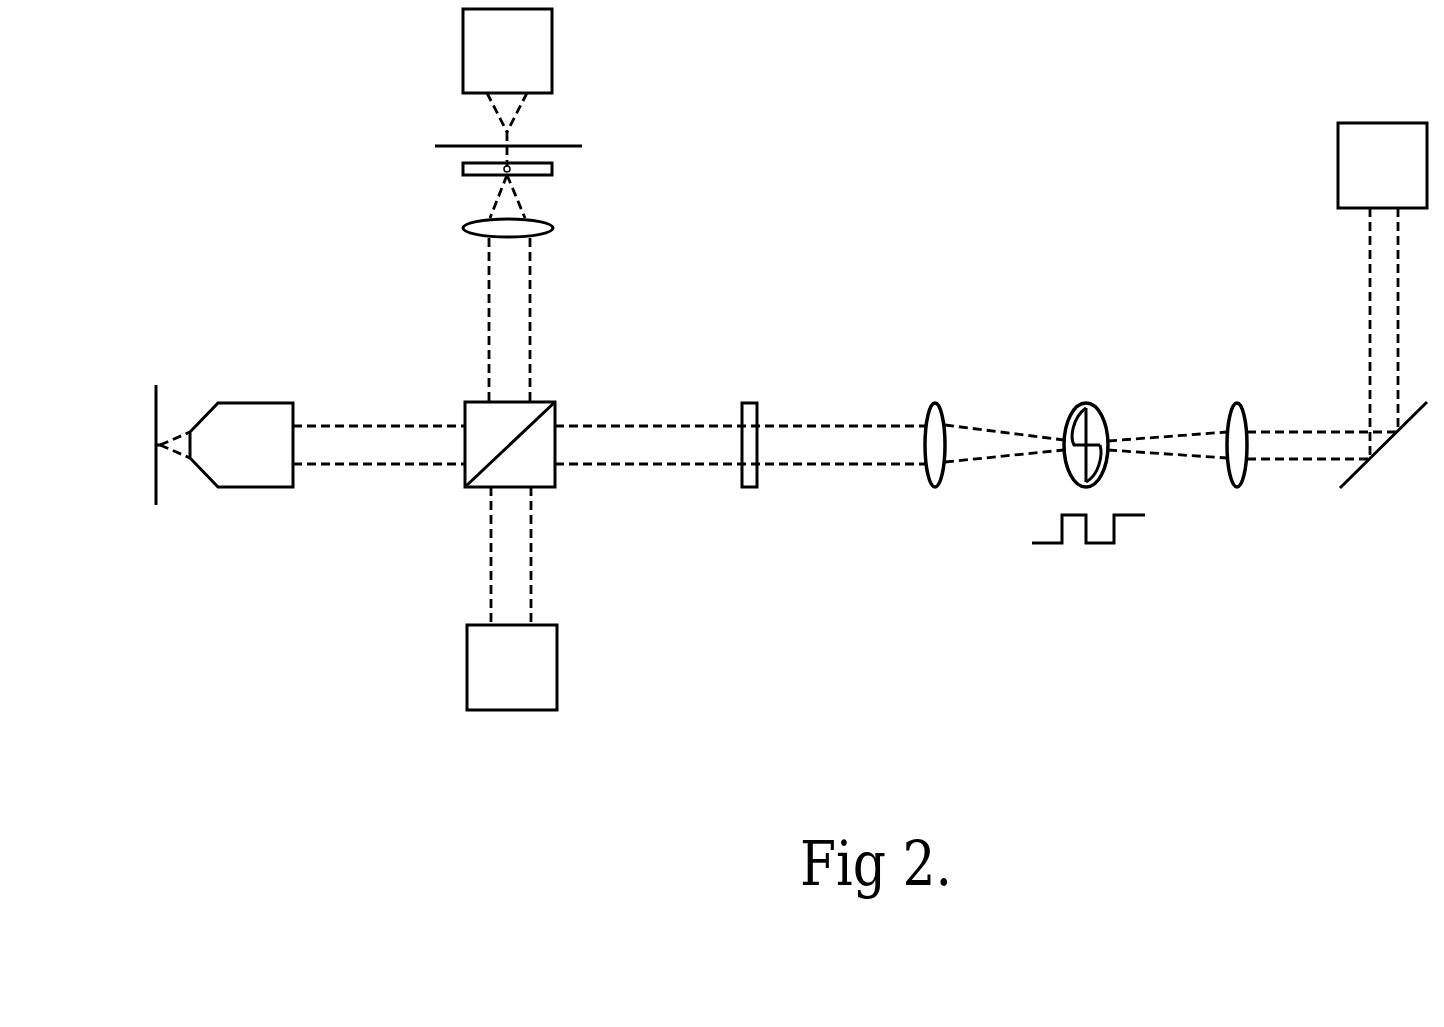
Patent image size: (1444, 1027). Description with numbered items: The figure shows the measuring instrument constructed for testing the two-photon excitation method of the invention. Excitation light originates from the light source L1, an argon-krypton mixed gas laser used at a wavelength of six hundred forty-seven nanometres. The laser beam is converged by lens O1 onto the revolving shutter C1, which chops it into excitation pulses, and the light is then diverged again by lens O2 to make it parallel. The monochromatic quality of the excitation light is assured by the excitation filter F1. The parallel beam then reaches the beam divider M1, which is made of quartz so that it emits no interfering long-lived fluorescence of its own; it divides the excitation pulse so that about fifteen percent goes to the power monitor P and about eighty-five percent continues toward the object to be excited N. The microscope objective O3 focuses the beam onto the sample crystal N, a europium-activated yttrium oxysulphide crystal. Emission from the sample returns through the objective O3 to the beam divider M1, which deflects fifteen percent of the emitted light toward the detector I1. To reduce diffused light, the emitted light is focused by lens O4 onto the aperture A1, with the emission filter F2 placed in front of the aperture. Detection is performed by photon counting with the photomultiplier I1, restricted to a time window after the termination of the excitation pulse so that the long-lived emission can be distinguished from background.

The detector I1 is at (507, 51).
The aperture A1 is at (482, 149).
The emission filter F2 is at (539, 174).
The lens O4 is at (468, 227).
The beam divider M1 is at (560, 397).
The object to be excited N is at (155, 466).
The microscope objective O3 is at (241, 475).
The excitation filter F1 is at (748, 475).
The lens O2 is at (937, 475).
The revolving shutter C1 is at (1088, 450).
The lens O1 is at (1231, 473).
The light source L1 is at (1382, 165).
The power monitor P is at (512, 667).